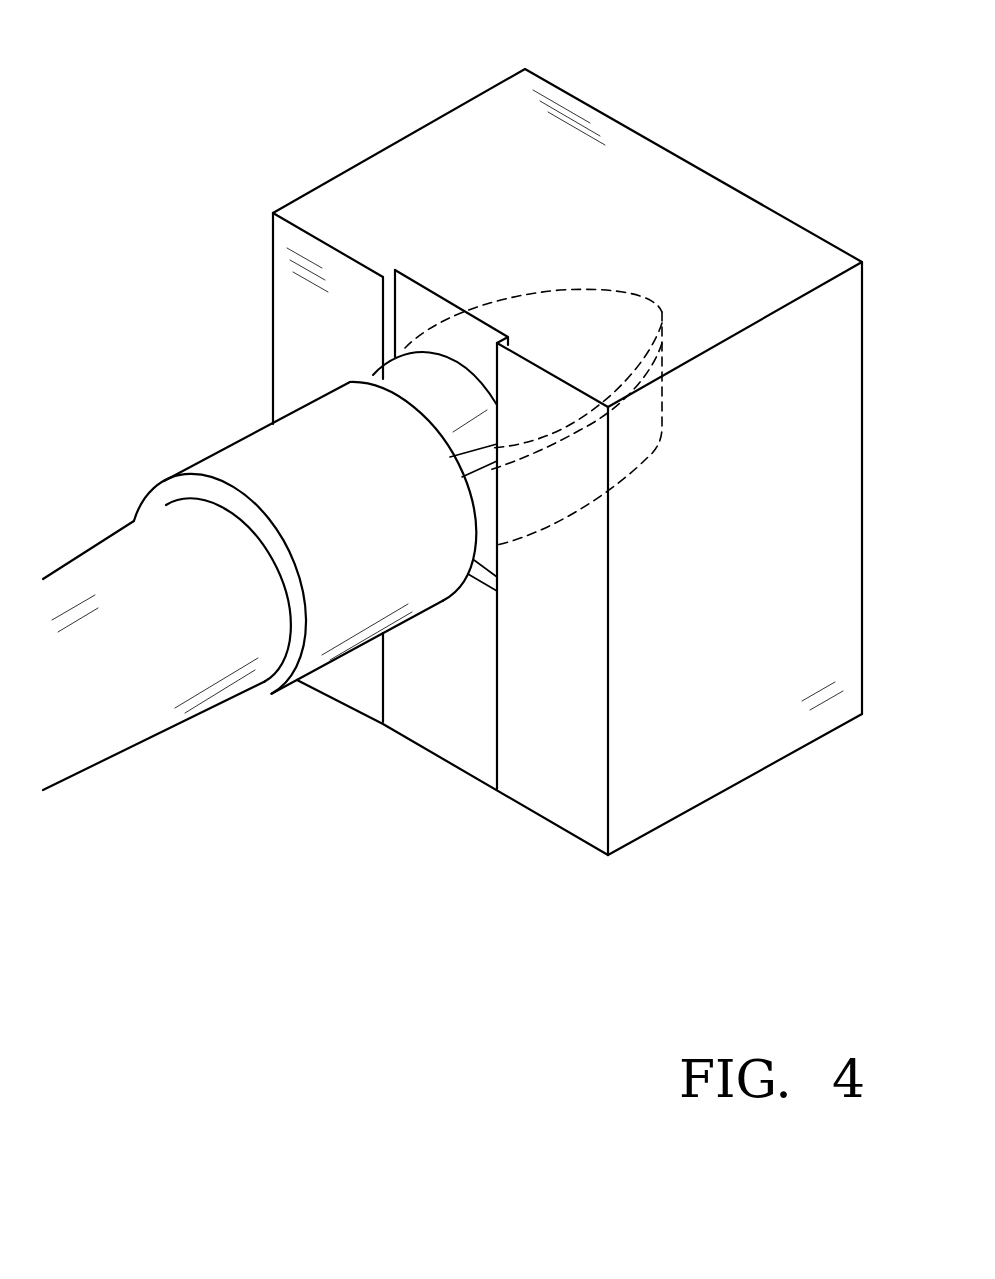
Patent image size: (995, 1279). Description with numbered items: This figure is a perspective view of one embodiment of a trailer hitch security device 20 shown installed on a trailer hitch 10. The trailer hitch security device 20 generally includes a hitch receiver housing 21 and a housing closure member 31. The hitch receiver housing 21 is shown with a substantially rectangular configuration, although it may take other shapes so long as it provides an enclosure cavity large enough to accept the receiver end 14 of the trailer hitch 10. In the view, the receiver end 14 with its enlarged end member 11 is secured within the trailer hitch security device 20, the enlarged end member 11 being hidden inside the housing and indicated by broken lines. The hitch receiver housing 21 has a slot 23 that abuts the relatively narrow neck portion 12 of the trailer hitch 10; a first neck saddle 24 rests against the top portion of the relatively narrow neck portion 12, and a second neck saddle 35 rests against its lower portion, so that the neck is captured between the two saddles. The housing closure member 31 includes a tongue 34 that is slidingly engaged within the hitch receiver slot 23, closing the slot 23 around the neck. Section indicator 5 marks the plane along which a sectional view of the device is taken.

The section line 5- 5 is at (187, 273).
The trailer hitch 10 is at (160, 445).
The enlarged end member 11 is at (628, 463).
The relatively narrow neck portion 12 is at (375, 376).
The receiver end 14 is at (664, 315).
The trailer hitch security device 20 is at (238, 73).
The hitch receiver housing 21 is at (752, 168).
The slot 23 is at (487, 509).
The first neck saddle 24 is at (462, 355).
The housing closure member 31 is at (448, 785).
The tongue 34 is at (416, 730).
The second neck saddle 35 is at (487, 561).